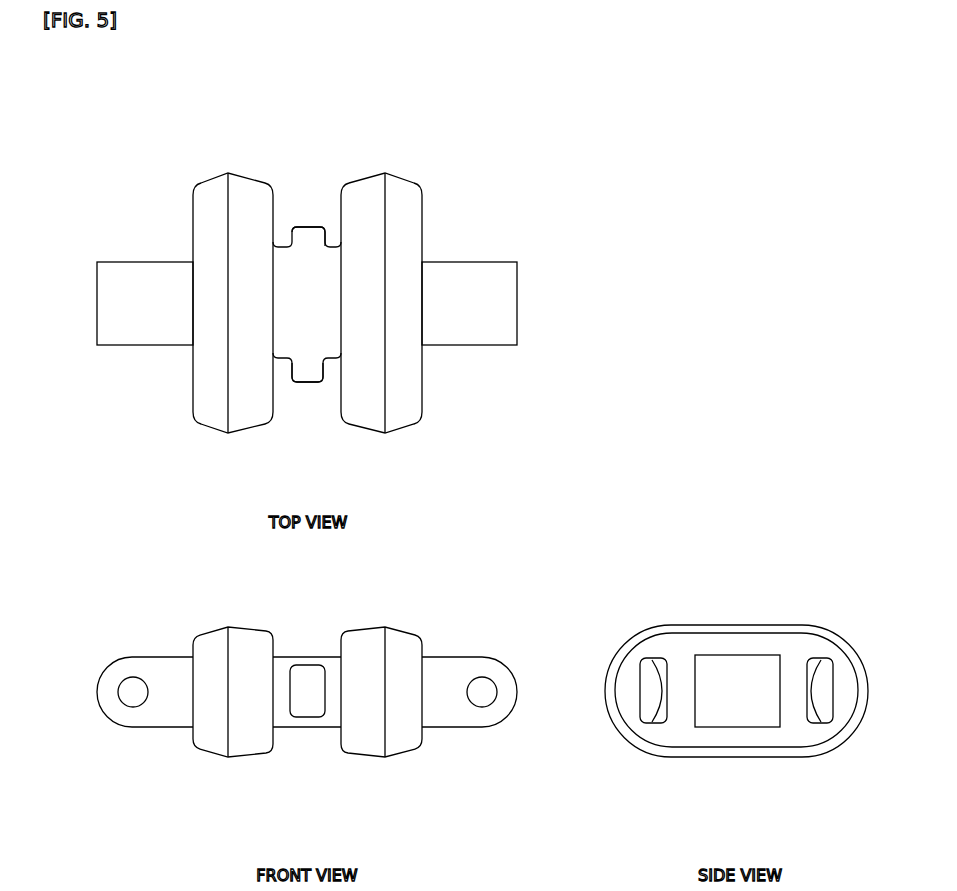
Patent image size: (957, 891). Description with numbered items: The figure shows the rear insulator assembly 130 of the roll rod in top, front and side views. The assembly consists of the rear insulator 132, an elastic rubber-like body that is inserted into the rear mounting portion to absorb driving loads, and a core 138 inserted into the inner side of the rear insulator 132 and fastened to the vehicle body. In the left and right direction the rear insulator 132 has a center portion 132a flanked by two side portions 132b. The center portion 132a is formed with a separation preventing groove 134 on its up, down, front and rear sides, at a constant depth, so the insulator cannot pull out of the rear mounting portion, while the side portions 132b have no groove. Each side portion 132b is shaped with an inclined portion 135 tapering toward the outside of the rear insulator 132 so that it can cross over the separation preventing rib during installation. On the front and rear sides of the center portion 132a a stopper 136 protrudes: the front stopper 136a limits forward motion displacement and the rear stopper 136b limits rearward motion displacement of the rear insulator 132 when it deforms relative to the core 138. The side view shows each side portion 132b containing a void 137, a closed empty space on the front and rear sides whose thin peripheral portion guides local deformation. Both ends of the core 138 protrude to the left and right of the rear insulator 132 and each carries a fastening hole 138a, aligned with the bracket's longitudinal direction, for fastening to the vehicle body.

The rear insulator assembly 130 is at (162, 174).
The rear insulator 132 is at (357, 93).
The center portion 132a is at (292, 222).
The side portion 132b is at (217, 168).
The separation preventing groove 134 is at (320, 322).
The inclined portion 135 is at (200, 250).
The stopper 136 is at (304, 225).
The front stopper 136a is at (302, 662).
The rear stopper 136b is at (822, 718).
The void 137 is at (650, 662).
The core 138 is at (500, 252).
The fastening hole 138a is at (125, 688).